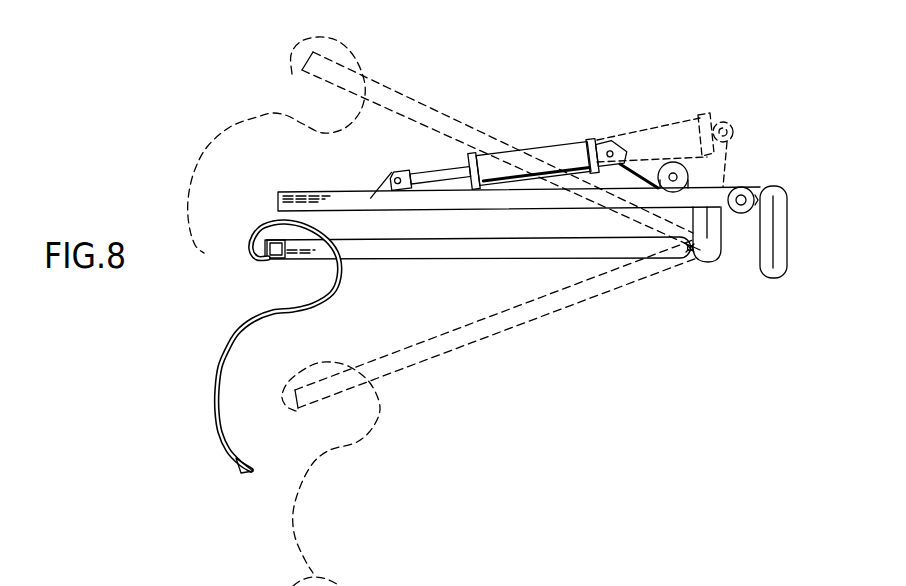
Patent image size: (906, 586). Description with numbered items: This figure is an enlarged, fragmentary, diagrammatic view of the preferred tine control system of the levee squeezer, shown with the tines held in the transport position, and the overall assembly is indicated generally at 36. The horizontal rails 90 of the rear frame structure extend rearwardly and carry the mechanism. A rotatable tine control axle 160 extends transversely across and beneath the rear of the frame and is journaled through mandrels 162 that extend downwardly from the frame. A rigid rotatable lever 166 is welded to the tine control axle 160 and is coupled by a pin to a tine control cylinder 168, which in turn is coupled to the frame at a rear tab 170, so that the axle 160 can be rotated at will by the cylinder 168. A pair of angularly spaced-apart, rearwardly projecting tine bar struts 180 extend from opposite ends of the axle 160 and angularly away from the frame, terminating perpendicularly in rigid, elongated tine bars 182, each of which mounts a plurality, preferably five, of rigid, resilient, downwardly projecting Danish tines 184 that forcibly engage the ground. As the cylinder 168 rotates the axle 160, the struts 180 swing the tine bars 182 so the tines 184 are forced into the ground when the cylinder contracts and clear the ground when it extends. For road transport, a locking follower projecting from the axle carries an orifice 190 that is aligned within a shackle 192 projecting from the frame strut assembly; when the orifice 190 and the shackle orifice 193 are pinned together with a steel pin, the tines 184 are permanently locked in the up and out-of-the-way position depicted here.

The lift arm assembly 36 is at (532, 80).
The horizontal rails 90 is at (541, 196).
The tine control axle 160 is at (693, 262).
The mandrels 162 is at (701, 221).
The rotatable lever 166 is at (627, 147).
The tine control cylinder 168 is at (558, 158).
The rear tab 170 is at (388, 189).
The tine bar struts 180 is at (402, 97).
The tine bars 182 is at (274, 258).
The Danish tines 184 is at (223, 357).
The orifice 190 is at (665, 162).
The shackle 192 is at (738, 190).
The orifice 193 is at (746, 190).